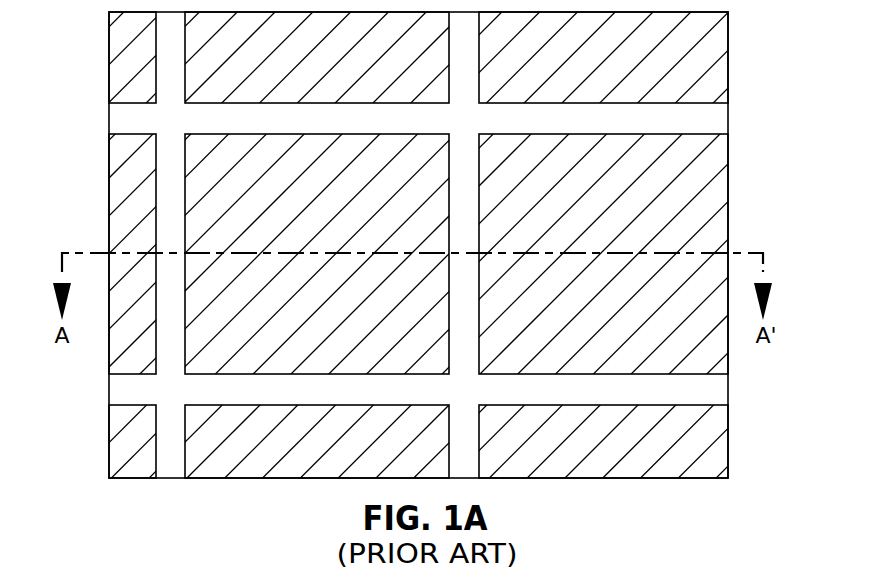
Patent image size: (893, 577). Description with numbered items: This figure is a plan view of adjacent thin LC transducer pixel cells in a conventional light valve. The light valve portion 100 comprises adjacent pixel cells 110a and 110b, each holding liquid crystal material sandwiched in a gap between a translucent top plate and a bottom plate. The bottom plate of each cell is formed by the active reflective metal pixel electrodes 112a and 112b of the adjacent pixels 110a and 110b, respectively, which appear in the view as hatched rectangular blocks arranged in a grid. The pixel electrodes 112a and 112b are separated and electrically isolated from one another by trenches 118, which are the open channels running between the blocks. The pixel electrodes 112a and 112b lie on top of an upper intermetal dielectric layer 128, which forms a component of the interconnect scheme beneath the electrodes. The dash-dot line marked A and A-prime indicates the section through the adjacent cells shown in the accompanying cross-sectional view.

The light valve portion 100 is at (95, 91).
The pixel cell 110a is at (388, 234).
The pixel cell 110b is at (712, 150).
The pixel electrode 112a is at (426, 220).
The pixel electrode 112b is at (700, 180).
The trench 118 is at (684, 115).
The upper intermetal dielectric layer 128 is at (717, 116).